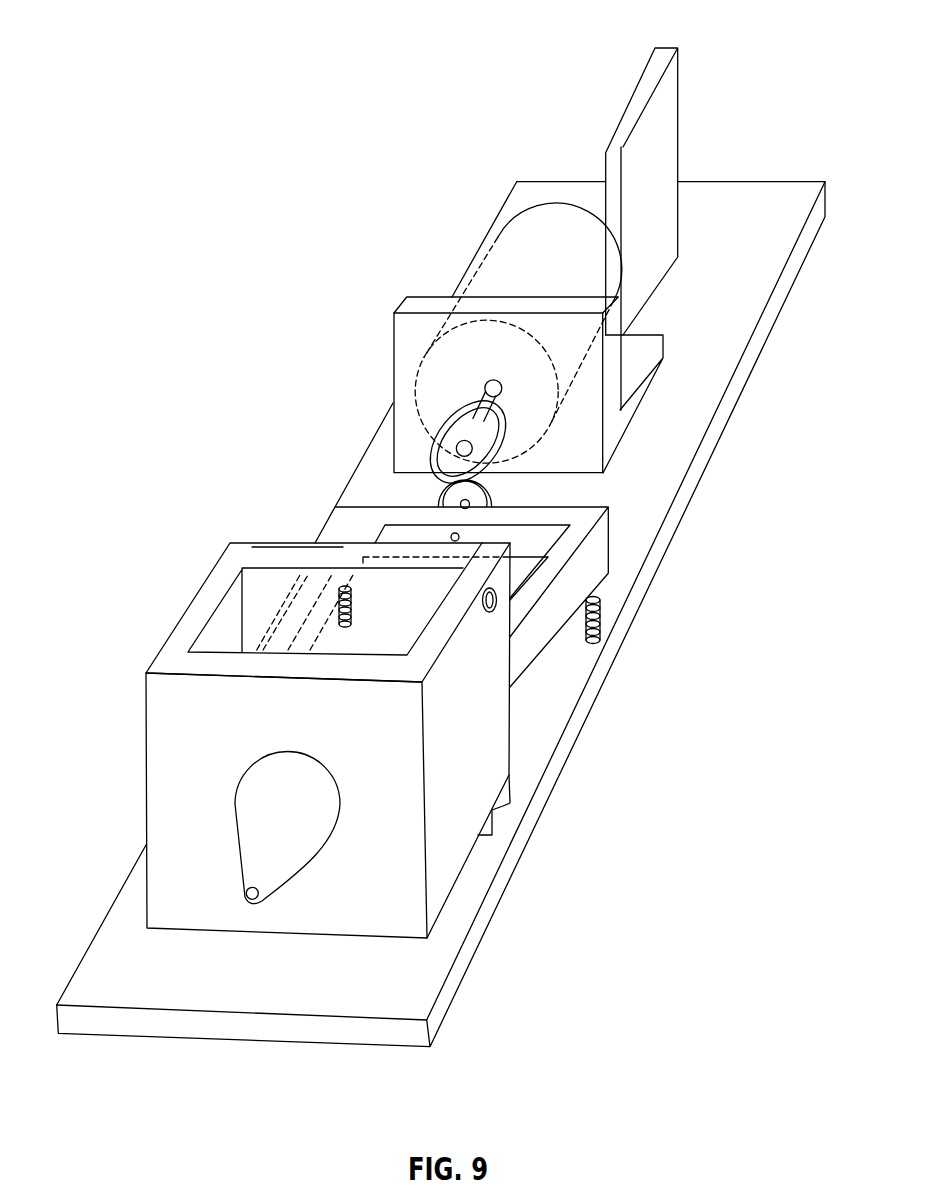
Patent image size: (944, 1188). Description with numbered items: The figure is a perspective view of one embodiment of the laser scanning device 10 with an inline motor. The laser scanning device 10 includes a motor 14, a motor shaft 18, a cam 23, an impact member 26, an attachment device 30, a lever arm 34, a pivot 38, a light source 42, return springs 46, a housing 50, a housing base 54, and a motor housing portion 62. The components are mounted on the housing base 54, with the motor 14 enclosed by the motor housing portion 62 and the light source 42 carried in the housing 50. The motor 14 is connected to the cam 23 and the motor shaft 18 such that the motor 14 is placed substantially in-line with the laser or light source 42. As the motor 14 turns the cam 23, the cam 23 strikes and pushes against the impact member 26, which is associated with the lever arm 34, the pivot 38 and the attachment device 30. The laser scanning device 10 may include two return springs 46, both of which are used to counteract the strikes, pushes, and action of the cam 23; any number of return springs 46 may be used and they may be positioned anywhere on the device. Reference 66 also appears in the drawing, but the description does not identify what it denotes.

The laser scanning device 10 is at (440, 140).
The motor 14 is at (513, 260).
The motor shaft 18 is at (483, 390).
The cam 23 is at (443, 455).
The impact member 26 is at (480, 500).
The attachment device 30 is at (451, 536).
The lever arm 34 is at (600, 552).
The pivot 38 is at (487, 612).
The light source 42 is at (247, 825).
The return springs 46 is at (343, 603).
The housing 50 is at (503, 806).
The housing base 54 is at (777, 202).
The motor housing portion 62 is at (667, 120).
The cam ring 66 is at (503, 418).